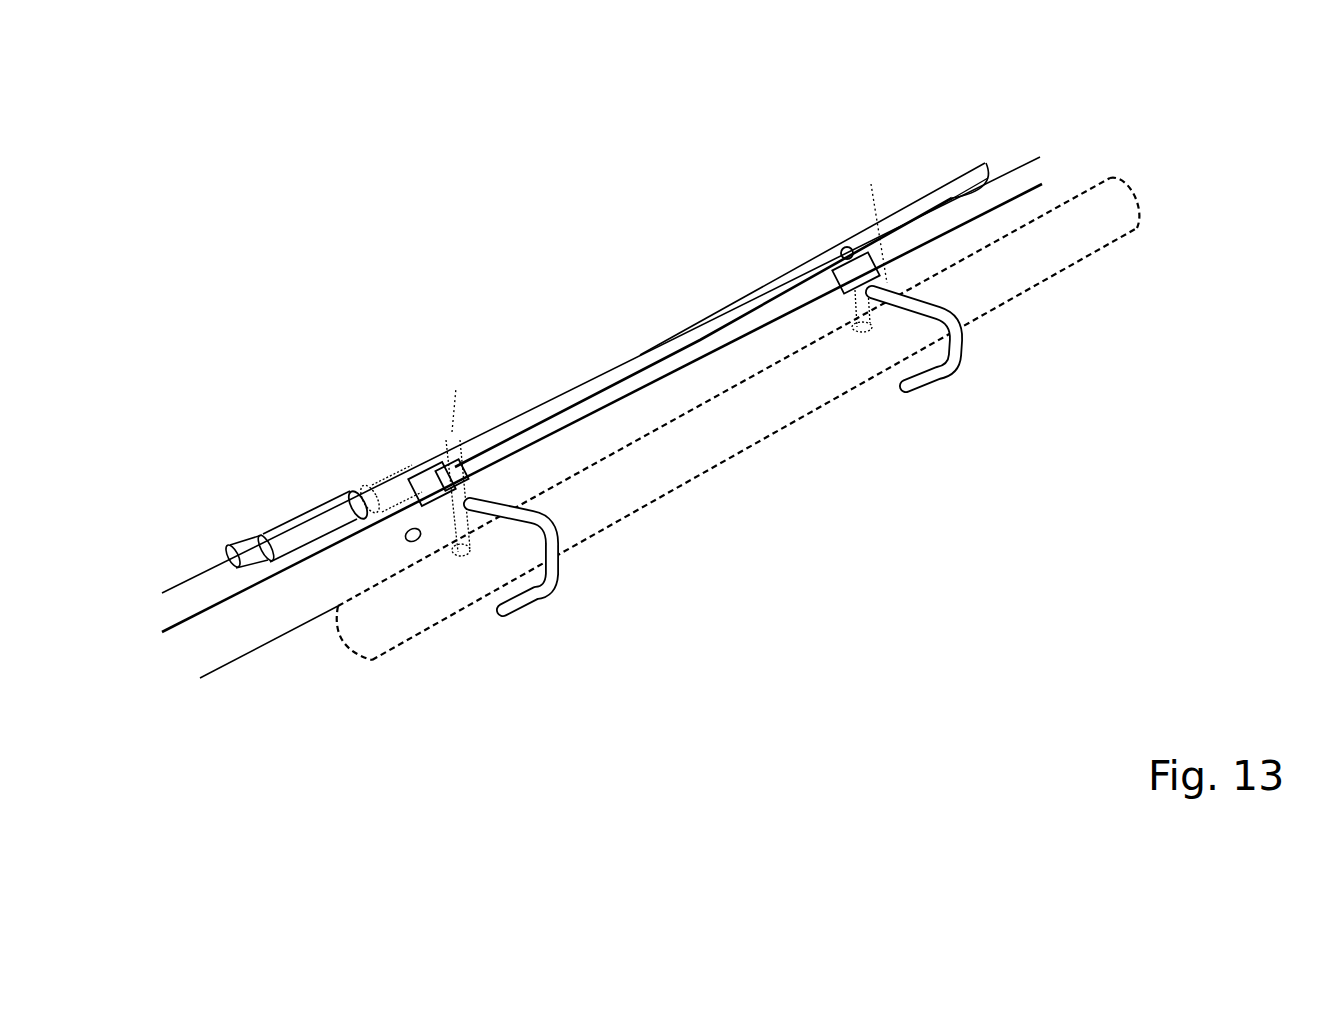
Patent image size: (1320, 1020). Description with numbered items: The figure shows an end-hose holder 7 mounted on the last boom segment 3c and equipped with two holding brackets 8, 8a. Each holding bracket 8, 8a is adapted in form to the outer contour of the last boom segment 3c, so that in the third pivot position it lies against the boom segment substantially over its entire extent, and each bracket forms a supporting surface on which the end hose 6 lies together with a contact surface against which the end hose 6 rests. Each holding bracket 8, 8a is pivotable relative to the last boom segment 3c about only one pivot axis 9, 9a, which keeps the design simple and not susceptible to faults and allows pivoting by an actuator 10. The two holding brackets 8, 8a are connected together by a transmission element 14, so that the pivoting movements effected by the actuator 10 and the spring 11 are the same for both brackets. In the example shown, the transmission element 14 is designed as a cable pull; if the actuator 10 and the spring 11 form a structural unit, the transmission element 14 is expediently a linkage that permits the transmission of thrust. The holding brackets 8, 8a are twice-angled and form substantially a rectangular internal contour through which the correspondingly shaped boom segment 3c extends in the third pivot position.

The end hose 6 is at (717, 462).
The end-hose holder 7 is at (603, 237).
The last boom segment 3c is at (203, 592).
The transmission element 14 is at (727, 318).
The spring 11 is at (939, 184).
The actuator 10 is at (326, 521).
The pivot axis 9 is at (450, 437).
The pivot axis 9a is at (871, 178).
The holding bracket 8 is at (538, 606).
The holding bracket 8a is at (888, 283).